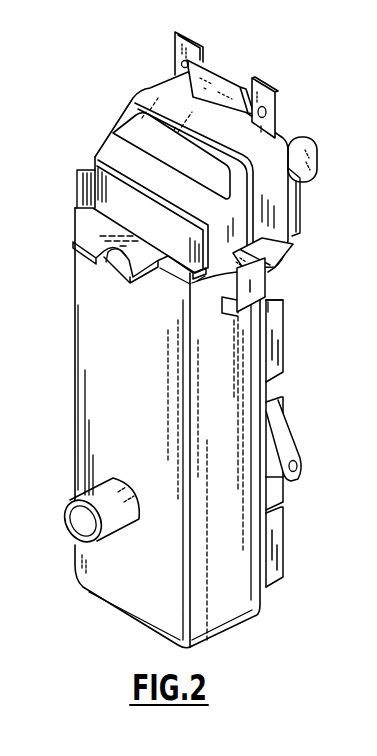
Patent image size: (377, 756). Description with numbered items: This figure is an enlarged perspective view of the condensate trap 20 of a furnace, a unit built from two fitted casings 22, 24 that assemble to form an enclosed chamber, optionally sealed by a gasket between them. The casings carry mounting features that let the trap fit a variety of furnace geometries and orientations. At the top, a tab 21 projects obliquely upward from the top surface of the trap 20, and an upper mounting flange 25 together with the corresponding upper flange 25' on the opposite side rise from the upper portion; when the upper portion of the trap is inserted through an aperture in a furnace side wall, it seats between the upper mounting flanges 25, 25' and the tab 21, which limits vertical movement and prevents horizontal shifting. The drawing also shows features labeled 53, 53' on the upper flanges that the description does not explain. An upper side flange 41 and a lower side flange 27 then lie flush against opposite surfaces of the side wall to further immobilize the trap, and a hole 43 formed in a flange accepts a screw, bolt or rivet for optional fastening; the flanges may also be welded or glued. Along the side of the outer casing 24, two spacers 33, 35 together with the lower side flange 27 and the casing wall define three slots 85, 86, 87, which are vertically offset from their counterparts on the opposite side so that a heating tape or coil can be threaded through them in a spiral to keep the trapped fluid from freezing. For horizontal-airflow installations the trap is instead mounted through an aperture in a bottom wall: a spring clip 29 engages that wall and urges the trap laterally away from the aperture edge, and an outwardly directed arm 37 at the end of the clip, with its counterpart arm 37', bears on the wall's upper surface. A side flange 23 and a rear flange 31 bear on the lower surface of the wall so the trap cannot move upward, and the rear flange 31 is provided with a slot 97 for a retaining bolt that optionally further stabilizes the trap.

The condensate trap 20 is at (65, 217).
The tab 21 is at (222, 73).
The casing 22 is at (213, 620).
The side flange 23 is at (300, 252).
The outer casing 24 is at (262, 168).
The upper mounting flange 25 is at (295, 88).
The upper mounting flange 25' is at (217, 40).
The lower side flange 27 is at (300, 438).
The spring clip 29 is at (268, 279).
The rear flange 31 is at (77, 238).
The spacer 33 is at (273, 547).
The spacer 35 is at (278, 343).
The arm 37 is at (177, 293).
The arm 37' is at (69, 160).
The upper side flange 41 is at (302, 213).
The hole 43 is at (300, 463).
The tab hole 53 is at (300, 108).
The tab hole 53' is at (138, 69).
The slot 85 is at (274, 297).
The slot 86 is at (277, 388).
The slot 87 is at (277, 498).
The slot 97 is at (100, 257).